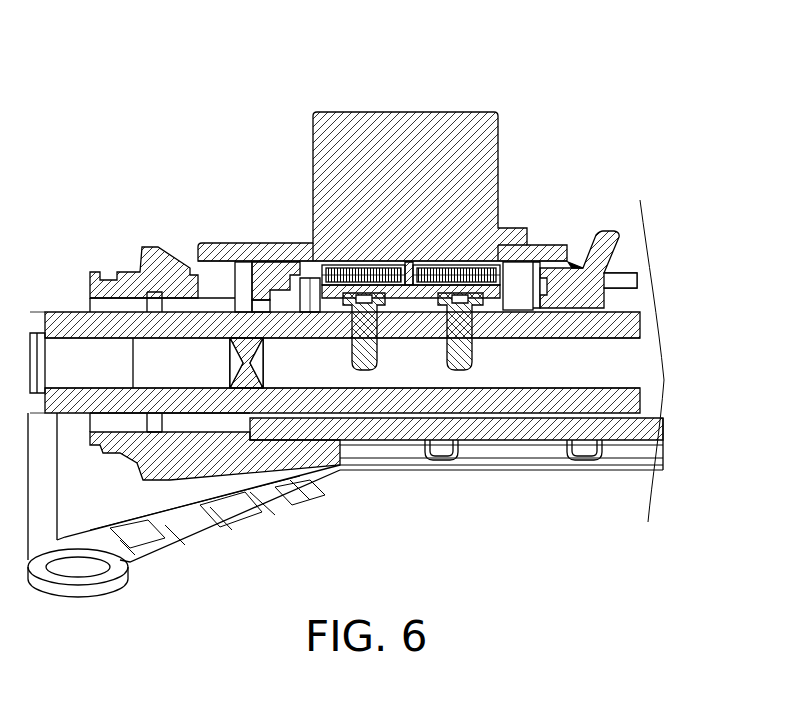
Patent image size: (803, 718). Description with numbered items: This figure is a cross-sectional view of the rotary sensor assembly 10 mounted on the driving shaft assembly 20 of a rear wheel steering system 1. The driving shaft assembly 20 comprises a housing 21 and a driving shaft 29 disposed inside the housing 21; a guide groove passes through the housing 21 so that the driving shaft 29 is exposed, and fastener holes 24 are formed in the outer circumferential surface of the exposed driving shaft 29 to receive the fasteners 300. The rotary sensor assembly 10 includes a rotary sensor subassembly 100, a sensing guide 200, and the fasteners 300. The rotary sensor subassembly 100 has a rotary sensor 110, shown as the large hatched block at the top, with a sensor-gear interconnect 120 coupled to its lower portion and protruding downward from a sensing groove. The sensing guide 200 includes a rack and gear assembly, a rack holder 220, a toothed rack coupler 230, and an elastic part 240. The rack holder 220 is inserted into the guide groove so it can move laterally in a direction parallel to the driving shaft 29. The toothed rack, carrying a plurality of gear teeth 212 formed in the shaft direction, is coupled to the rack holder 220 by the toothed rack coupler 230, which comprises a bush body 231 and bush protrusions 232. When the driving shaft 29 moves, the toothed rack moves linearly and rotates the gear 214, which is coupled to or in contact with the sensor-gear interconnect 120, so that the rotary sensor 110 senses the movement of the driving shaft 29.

The rear wheel steering system 1 is at (590, 49).
The rotary sensor assembly 10 is at (220, 112).
The driving shaft assembly 20 is at (574, 492).
The housing 21 is at (507, 442).
The fastener holes 24 is at (538, 330).
The driving shaft 29 is at (418, 365).
The rotary sensor subassembly 100 is at (314, 78).
The rotary sensor 110 is at (358, 138).
The sensor-gear interconnect 120 is at (398, 266).
The sensing guide 200 is at (208, 240).
The gear teeth 212 is at (498, 205).
The gear 214 is at (452, 266).
The rack holder 220 is at (425, 292).
The toothed rack coupler 230 is at (268, 232).
The bush body 231 is at (250, 262).
The bush protrusions 232 is at (288, 262).
The elastic part 240 is at (327, 292).
The fasteners 300 is at (522, 243).